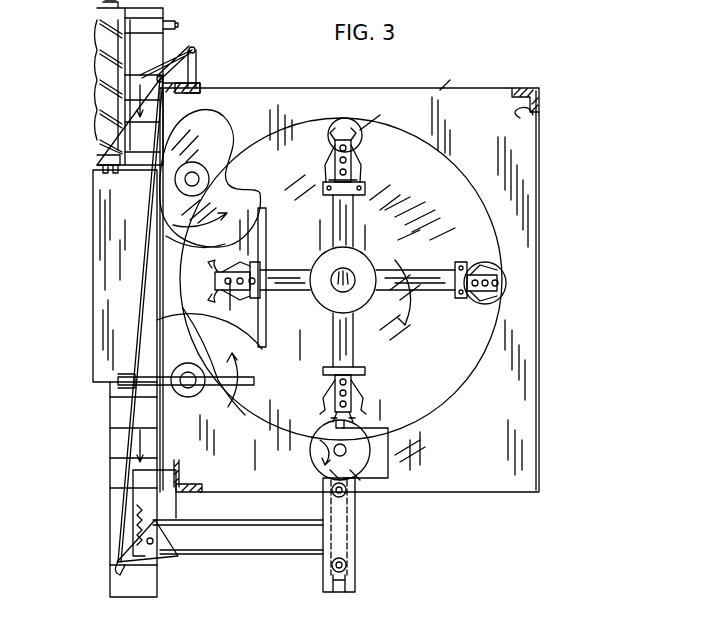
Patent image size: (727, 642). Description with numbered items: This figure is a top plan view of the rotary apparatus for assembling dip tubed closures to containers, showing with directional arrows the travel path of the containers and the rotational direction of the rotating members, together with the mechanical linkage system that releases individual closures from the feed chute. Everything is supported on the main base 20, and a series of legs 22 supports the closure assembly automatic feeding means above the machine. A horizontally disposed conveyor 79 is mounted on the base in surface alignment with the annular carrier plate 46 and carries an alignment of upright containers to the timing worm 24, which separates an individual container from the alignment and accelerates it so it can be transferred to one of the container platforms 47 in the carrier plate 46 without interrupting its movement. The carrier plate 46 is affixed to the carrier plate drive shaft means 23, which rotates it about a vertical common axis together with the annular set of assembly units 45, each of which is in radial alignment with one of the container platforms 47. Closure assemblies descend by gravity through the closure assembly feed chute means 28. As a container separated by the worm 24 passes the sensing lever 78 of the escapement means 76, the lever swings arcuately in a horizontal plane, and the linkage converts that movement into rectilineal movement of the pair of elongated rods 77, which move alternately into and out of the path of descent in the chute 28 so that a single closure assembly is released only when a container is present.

The main base 20 is at (472, 88).
The legs 22 is at (535, 118).
The carrier plate drive shaft means 23 is at (352, 290).
The timing worm 24 is at (100, 77).
The closure assembly feed chute means 28 is at (355, 535).
The assembly units 45 is at (330, 145).
The carrier plate 46 is at (410, 145).
The container platforms 47 is at (348, 128).
The escapement means 76 is at (176, 562).
The elongated rods 77 is at (262, 520).
The sensing lever 78 is at (172, 55).
The conveyor 79 is at (112, 447).